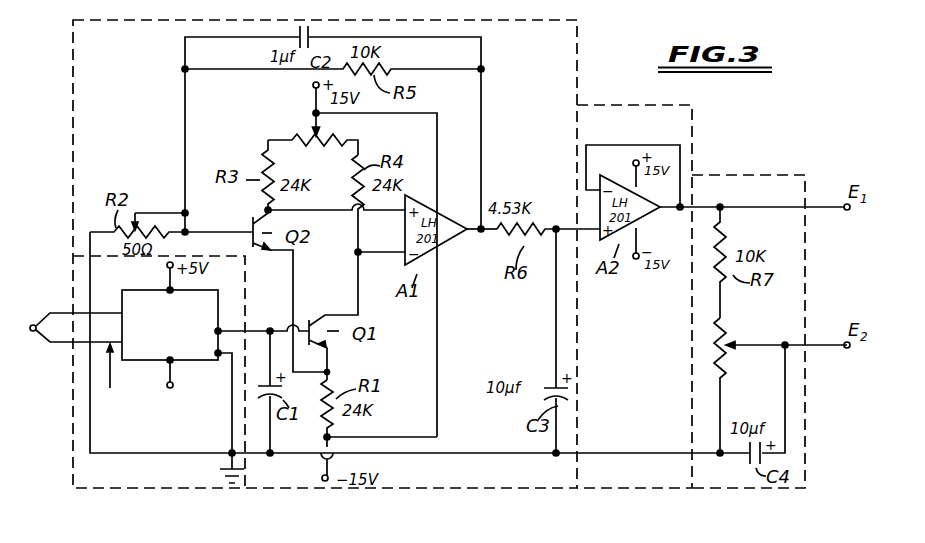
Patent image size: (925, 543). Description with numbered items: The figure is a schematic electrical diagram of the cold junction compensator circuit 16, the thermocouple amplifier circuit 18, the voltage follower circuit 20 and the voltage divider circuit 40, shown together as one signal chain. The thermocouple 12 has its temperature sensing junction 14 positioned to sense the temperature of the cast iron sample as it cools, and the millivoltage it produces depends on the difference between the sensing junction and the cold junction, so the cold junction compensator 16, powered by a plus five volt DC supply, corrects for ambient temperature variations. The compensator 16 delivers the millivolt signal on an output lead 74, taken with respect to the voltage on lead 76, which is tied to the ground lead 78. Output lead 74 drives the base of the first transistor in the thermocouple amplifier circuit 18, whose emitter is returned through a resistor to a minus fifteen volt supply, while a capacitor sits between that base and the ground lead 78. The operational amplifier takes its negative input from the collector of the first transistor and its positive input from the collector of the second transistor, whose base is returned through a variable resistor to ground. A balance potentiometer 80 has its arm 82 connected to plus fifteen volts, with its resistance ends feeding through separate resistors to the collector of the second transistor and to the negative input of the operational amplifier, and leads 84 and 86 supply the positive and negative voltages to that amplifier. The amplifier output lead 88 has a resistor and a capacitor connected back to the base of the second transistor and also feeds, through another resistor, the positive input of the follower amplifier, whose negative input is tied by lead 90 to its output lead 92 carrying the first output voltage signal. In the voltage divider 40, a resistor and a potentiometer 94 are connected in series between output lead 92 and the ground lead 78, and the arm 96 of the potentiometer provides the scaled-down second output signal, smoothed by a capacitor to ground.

The thermocouple 12 is at (109, 382).
The temperature sensing junction 14 is at (38, 318).
The cold junction compensator circuit 16 is at (149, 366).
The thermocouple amplifier circuit 18 is at (325, 275).
The voltage follower circuit 20 is at (637, 317).
The voltage divider circuit 40 is at (768, 352).
The output lead 74 is at (232, 318).
The lead 76 is at (230, 417).
The ground lead 78 is at (180, 452).
The balance potentiometer 80 is at (296, 140).
The arm 82 is at (312, 129).
The lead 84 is at (406, 117).
The lead 86 is at (437, 358).
The output lead 88 is at (480, 246).
The lead 90 is at (632, 150).
The output lead 92 is at (671, 212).
The potentiometer 94 is at (728, 335).
The arm 96 is at (772, 364).